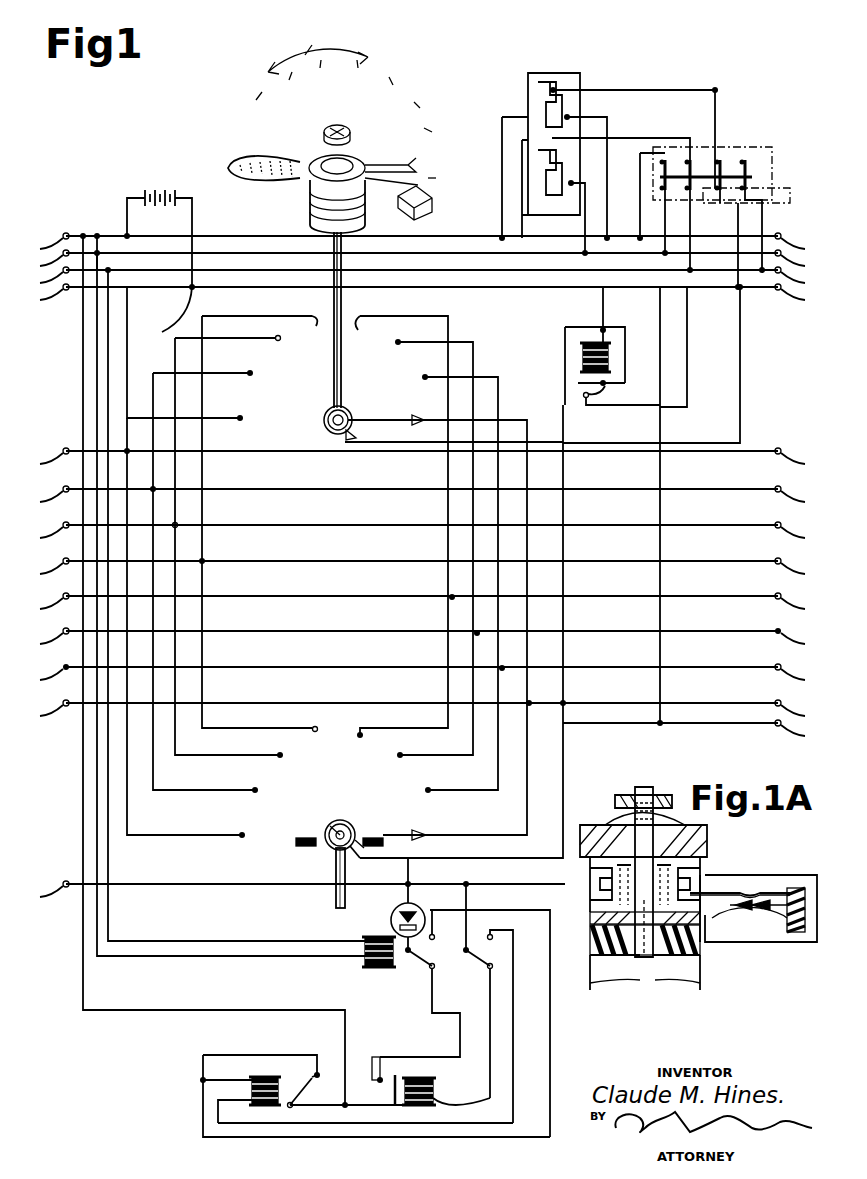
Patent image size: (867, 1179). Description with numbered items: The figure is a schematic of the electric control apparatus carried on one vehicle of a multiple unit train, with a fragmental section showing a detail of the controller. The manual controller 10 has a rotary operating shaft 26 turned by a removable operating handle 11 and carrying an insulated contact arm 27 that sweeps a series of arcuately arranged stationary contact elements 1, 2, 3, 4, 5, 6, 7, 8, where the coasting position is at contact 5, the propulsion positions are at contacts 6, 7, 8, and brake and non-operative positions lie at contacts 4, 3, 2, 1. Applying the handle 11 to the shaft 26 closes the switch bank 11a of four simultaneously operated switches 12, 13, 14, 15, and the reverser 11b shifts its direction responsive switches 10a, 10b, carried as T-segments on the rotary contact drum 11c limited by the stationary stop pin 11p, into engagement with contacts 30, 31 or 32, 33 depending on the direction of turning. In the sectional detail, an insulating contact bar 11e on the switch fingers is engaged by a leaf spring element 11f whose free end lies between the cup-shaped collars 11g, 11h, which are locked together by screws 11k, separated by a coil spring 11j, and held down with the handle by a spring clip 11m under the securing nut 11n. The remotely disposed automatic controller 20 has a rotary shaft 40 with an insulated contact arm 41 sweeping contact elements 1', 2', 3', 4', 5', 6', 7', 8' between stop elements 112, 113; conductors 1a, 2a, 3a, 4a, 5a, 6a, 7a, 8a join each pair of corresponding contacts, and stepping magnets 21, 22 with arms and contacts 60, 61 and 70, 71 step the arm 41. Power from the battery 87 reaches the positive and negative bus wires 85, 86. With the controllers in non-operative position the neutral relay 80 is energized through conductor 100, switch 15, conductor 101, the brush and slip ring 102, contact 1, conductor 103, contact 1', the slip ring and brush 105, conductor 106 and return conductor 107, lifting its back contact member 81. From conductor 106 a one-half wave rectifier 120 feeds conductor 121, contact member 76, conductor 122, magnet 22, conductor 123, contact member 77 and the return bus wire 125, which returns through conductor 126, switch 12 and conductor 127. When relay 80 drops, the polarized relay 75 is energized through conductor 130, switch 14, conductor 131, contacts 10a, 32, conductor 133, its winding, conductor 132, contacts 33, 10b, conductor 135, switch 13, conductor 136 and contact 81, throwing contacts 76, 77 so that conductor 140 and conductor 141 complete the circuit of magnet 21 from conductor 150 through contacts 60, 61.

In FIG. 1, the stationary insulated contact element 1 is at (440, 552).
In FIG. 1, the stationary insulated contact element 2 is at (454, 521).
In FIG. 1, the stationary insulated contact element 3 is at (429, 486).
In FIG. 1, the stationary insulated contact element 4 is at (403, 458).
In FIG. 1, the stationary insulated contact element 5 is at (260, 440).
In FIG. 1, the stationary insulated contact element 6 is at (232, 432).
In FIG. 1, the stationary insulated contact element 7 is at (207, 431).
In FIG. 1, the stationary insulated contact element 8 is at (192, 370).
In FIG. 1, the stationary contact element 1' is at (416, 827).
In FIG. 1, the stationary contact element 2' is at (448, 741).
In FIG. 1, the stationary contact element 3' is at (429, 707).
In FIG. 1, the stationary contact element 4' is at (400, 679).
In FIG. 1, the stationary contact element 5' is at (264, 661).
In FIG. 1, the stationary contact element 6' is at (235, 654).
In FIG. 1, the stationary contact element 7' is at (209, 652).
In FIG. 1, the stationary contact element 8' is at (195, 632).
In FIG. 1, the conductor 1a is at (360, 702).
In FIG. 1, the conductor 2a is at (368, 668).
In FIG. 1, the conductor 3a is at (368, 632).
In FIG. 1, the conductor 4a is at (368, 598).
In FIG. 1, the conductor 5a is at (202, 449).
In FIG. 1, the conductor 6a is at (220, 515).
In FIG. 1, the conductor 7a is at (228, 480).
In FIG. 1, the conductor 8a is at (316, 452).
In FIG. 1, the manual controller 10 is at (348, 318).
In FIG. 1, the direction responsive switch 10a is at (528, 92).
In FIG. 1, the direction responsive switch 10b is at (530, 158).
In FIG. 1A, the removable operating handle 11 is at (606, 826).
In FIG. 1, the switch bank 11a is at (790, 160).
In FIG. 1, the reverser 11b is at (538, 82).
In FIG. 1, the rotary contact drum 11c is at (585, 90).
In FIG. 1A, the rotary contact drum 11c is at (645, 988).
In FIG. 1A, the insulating contact bar 11e is at (730, 905).
In FIG. 1A, the flexible leaf spring element 11f is at (764, 895).
In FIG. 1A, the upper cup-shaped collar 11g is at (708, 876).
In FIG. 1A, the lower cup-shaped collar 11h is at (590, 920).
In FIG. 1A, the coil spring 11j is at (636, 950).
In FIG. 1A, the screws 11k is at (612, 894).
In FIG. 1A, the spring clip 11m is at (675, 818).
In FIG. 1A, the securing nut 11n is at (627, 787).
In FIG. 1, the stationary stop pin 11p is at (562, 215).
In FIG. 1, the switch 12 is at (665, 158).
In FIG. 1, the switch 13 is at (690, 158).
In FIG. 1, the switch 14 is at (722, 158).
In FIG. 1, the switch 15 is at (748, 162).
In FIG. 1, the automatic controller 20 is at (328, 872).
In FIG. 1, the stepping magnet 21 is at (240, 1090).
In FIG. 1, the stepping magnet 22 is at (450, 1092).
In FIG. 1, the rotary operating shaft 26 is at (344, 366).
In FIG. 1A, the rotary operating shaft 26 is at (648, 955).
In FIG. 1, the contact arm 27 is at (368, 416).
In FIG. 1, the stationary contact element 30 is at (538, 118).
In FIG. 1, the stationary contact element 31 is at (540, 186).
In FIG. 1, the stationary contact element 32 is at (568, 117).
In FIG. 1, the stationary contact element 33 is at (572, 182).
In FIG. 1, the rotary shaft 40 is at (330, 826).
In FIG. 1, the insulated contact arm 41 is at (385, 835).
In FIG. 1A, the insulated contact arm 41 is at (632, 940).
In FIG. 1, the contact element 60 is at (302, 1092).
In FIG. 1, the contact element 61 is at (318, 1080).
In FIG. 1, the contact element 70 is at (394, 1100).
In FIG. 1, the contact element 71 is at (378, 1057).
In FIG. 1, the polarized relay 75 is at (379, 963).
In FIG. 1, the movable contact member 76 is at (424, 966).
In FIG. 1, the movable contact member 77 is at (486, 966).
In FIG. 1, the neutral relay 80 is at (580, 360).
In FIG. 1, the back contact member 81 is at (606, 392).
In FIG. 1, the positive bus wire 85 is at (125, 268).
In FIG. 1, the negative bus wire 86 is at (138, 313).
In FIG. 1, the battery 87 is at (155, 196).
In FIG. 1, the conductor 100 is at (768, 215).
In FIG. 1, the conductor 101 is at (742, 370).
In FIG. 1, the brush and slip ring 102 is at (344, 436).
In FIG. 1, the conductor 103 is at (535, 760).
In FIG. 1, the slip ring and brush 105 is at (346, 864).
In FIG. 1, the conductor 106 is at (562, 400).
In FIG. 1, the return conductor 107 is at (608, 312).
In FIG. 1, the stop element 112 is at (384, 842).
In FIG. 1, the stop element 113 is at (540, 215).
In FIG. 1, the one-half wave rectifier 120 is at (418, 912).
In FIG. 1, the conductor 121 is at (412, 872).
In FIG. 1, the conductor 122 is at (458, 1020).
In FIG. 1, the conductor 123 is at (488, 1052).
In FIG. 1, the return bus wire 125 is at (174, 888).
In FIG. 1, the conductor 126 is at (658, 660).
In FIG. 1, the conductor 127 is at (640, 200).
In FIG. 1, the conductor 130 is at (730, 205).
In FIG. 1, the conductor 131 is at (712, 88).
In FIG. 1, the conductor 132 is at (438, 252).
In FIG. 1, the conductor 133 is at (240, 238).
In FIG. 1, the conductor 135 is at (622, 138).
In FIG. 1, the conductor 136 is at (687, 362).
In FIG. 1, the conductor 140 is at (508, 920).
In FIG. 1, the conductor 141 is at (548, 948).
In FIG. 1, the conductor 150 is at (80, 372).